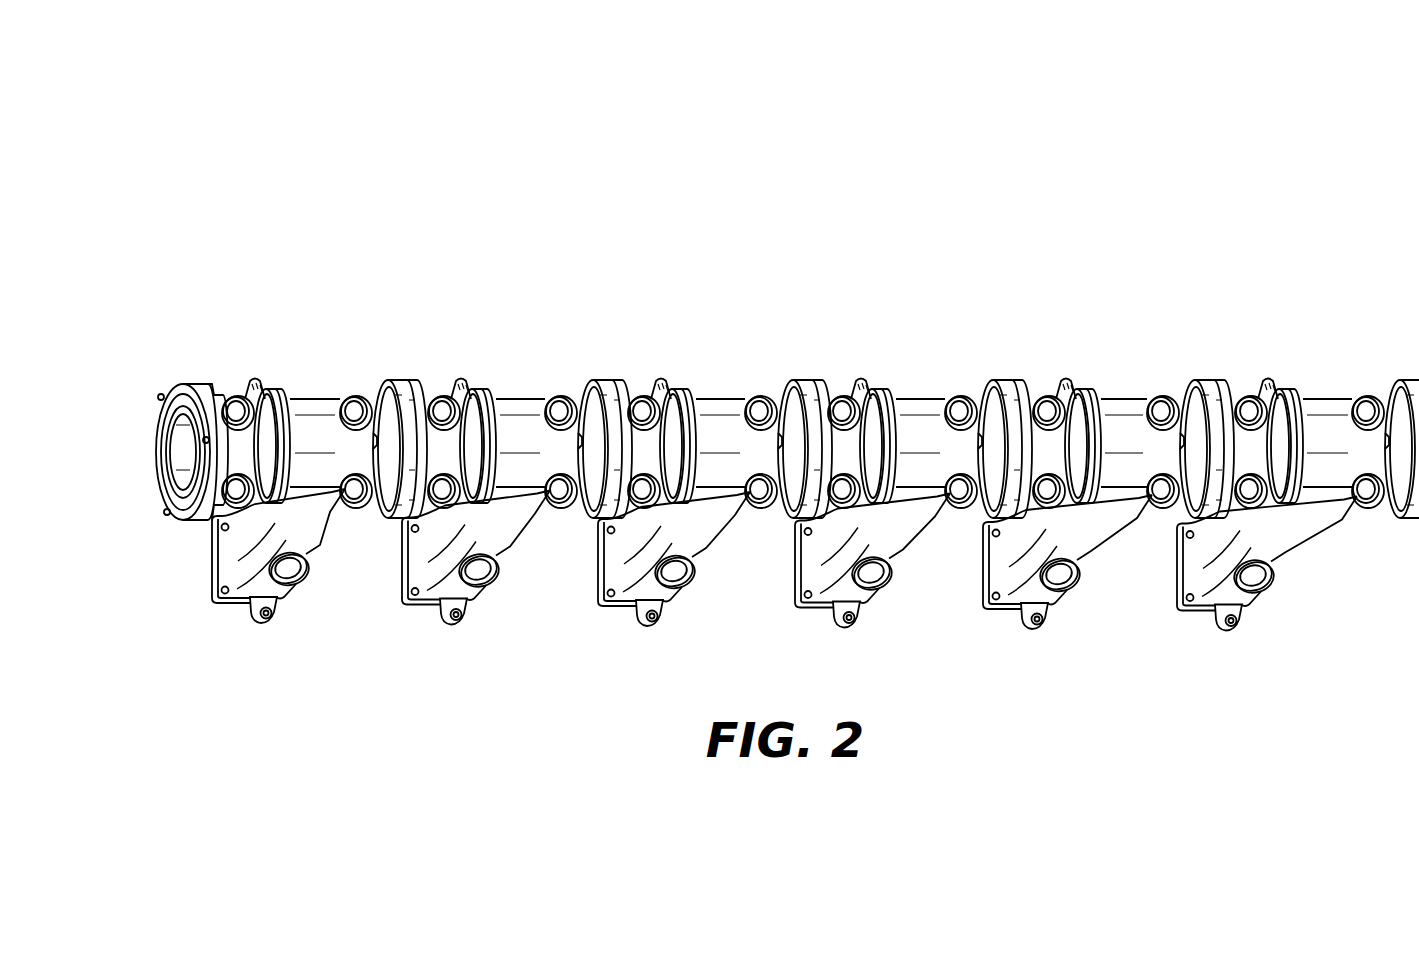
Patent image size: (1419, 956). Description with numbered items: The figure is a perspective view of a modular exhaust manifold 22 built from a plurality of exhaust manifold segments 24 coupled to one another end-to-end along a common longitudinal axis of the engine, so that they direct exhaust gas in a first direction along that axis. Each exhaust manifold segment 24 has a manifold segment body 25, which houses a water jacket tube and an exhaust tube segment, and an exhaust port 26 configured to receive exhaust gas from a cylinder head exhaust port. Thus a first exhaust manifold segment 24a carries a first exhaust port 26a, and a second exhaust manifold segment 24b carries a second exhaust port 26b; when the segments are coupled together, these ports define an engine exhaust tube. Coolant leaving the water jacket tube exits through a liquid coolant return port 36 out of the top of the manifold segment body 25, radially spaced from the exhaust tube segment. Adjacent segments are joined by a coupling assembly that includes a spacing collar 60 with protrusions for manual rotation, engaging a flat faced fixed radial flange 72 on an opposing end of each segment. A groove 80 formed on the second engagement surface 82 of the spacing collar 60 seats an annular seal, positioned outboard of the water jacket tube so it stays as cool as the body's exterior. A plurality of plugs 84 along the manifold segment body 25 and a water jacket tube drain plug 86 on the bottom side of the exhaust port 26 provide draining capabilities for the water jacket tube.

The modular exhaust manifold 22 is at (194, 180).
The exhaust manifold segment 24 is at (282, 366).
The first exhaust manifold segment 24a is at (718, 386).
The second exhaust manifold segment 24b is at (513, 386).
The manifold segment body 25 is at (307, 412).
The exhaust port 26 is at (232, 563).
The first exhaust port 26a is at (633, 597).
The second exhaust port 26b is at (437, 597).
The liquid coolant return port 36 is at (242, 391).
The spacing collar 60 is at (177, 387).
The fixed radial flange 72 is at (362, 383).
The groove 80 is at (157, 428).
The second engagement surface 82 is at (175, 498).
The plugs 84 is at (1027, 386).
The water jacket tube drain plug 86 is at (254, 618).